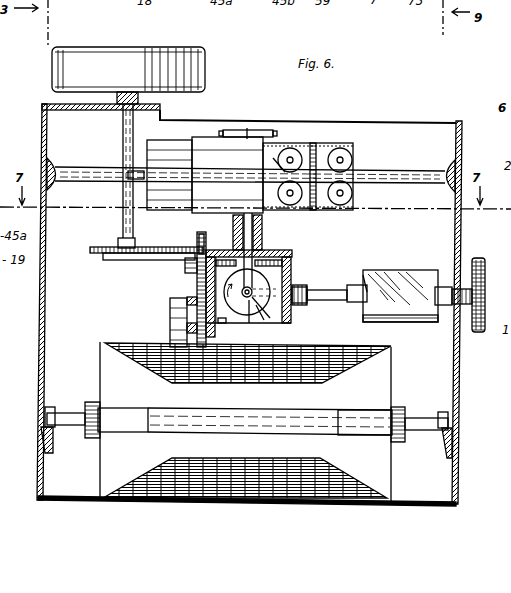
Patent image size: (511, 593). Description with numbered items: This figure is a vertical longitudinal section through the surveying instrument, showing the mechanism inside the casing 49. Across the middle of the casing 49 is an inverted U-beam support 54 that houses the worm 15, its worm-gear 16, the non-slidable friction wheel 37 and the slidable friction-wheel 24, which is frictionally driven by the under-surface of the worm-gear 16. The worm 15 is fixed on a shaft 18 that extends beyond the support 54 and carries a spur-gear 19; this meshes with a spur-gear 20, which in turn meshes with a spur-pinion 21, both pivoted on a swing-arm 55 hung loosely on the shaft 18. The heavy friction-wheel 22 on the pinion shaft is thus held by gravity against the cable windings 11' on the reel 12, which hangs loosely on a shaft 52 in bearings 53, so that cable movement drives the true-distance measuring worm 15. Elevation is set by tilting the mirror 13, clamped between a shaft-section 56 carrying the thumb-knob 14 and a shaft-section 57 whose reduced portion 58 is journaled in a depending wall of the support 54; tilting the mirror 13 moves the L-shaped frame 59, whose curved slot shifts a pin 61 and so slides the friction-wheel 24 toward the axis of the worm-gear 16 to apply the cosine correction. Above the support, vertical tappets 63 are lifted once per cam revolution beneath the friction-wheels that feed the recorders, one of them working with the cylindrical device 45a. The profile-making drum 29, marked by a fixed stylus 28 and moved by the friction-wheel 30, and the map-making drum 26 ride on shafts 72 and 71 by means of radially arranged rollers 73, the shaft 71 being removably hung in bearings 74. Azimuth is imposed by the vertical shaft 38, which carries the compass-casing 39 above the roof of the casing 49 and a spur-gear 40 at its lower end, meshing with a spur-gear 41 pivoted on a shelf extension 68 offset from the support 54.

The cable windings 11' is at (245, 430).
The reel 12 is at (106, 358).
The mirror 13 is at (400, 275).
The thumb-knob 14 is at (479, 266).
The worm 15 is at (294, 286).
The worm-gear 16 is at (284, 262).
The shaft 18 is at (210, 272).
The spur-gear 19 is at (198, 238).
The spur-gear 20 is at (210, 317).
The spur-pinion 21 is at (204, 340).
The friction-wheel 22 is at (177, 320).
The friction-wheel 24 is at (262, 330).
The drum 26 is at (178, 145).
The fixed stylus 28 is at (252, 130).
The drum 29 is at (278, 158).
The friction-wheel 30 is at (248, 214).
The friction wheel 37 is at (272, 318).
The vertical shaft 38 is at (125, 138).
The compass-casing 39 is at (185, 65).
The spur-gear 40 is at (90, 251).
The spur-gear 41 is at (186, 259).
The cylindrical device 45a is at (258, 240).
The casing 49 is at (42, 330).
The shaft 52 is at (76, 424).
The bearings 53 is at (50, 408).
The inverted U-beam support 54 is at (225, 315).
The swing-arm 55 is at (205, 248).
The shaft-section 56 is at (447, 290).
The shaft-section 57 is at (364, 285).
The reduced portion 58 is at (330, 300).
The L-shaped frame 59 is at (357, 286).
The pin 61 is at (296, 305).
The vertical tappets 63 is at (256, 324).
The shelf extension 68 is at (145, 258).
The shaft 71 is at (94, 175).
The shaft 72 is at (182, 178).
The rollers 73 is at (292, 192).
The bearings 74 is at (46, 165).